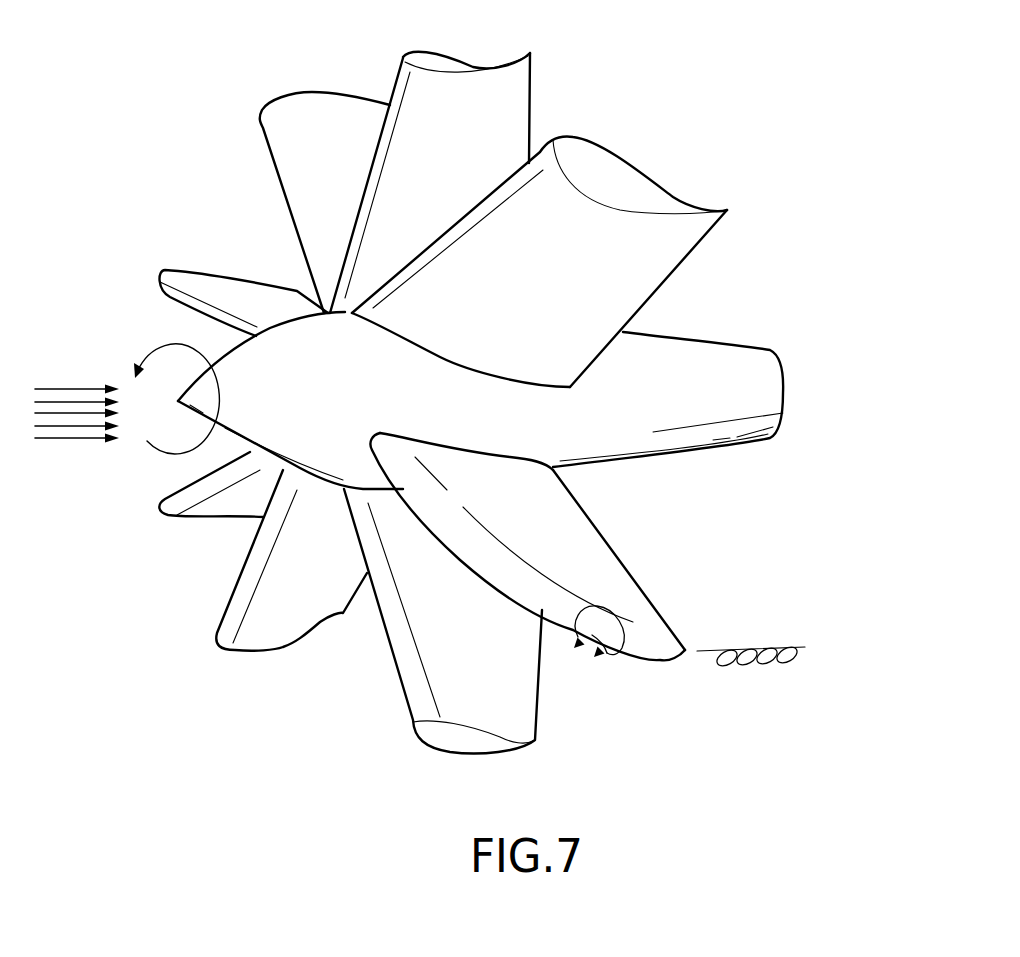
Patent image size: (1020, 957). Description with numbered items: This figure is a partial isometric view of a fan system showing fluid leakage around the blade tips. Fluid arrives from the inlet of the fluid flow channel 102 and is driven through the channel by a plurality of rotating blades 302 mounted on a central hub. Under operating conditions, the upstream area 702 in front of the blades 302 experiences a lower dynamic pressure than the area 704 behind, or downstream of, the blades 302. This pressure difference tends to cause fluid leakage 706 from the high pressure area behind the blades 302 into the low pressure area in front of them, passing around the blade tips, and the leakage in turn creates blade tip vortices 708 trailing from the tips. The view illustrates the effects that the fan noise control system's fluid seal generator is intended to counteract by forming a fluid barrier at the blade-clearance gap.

The fluid flow channel 102 is at (73, 389).
The blades 302 is at (525, 318).
The upstream area 702 is at (547, 177).
The area behind blades 704 is at (673, 200).
The fluid leakage 706 is at (627, 653).
The blade tip vortices 708 is at (805, 647).